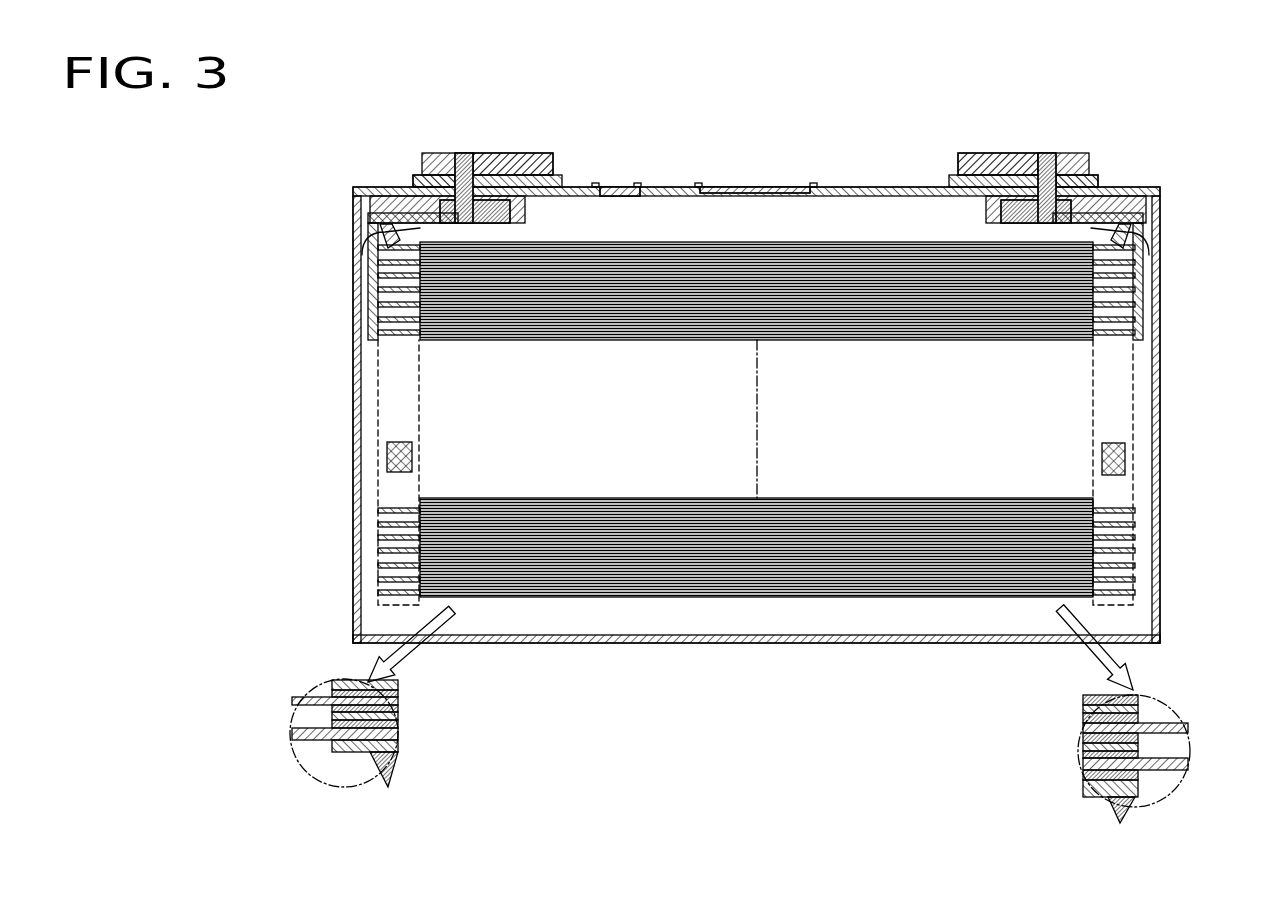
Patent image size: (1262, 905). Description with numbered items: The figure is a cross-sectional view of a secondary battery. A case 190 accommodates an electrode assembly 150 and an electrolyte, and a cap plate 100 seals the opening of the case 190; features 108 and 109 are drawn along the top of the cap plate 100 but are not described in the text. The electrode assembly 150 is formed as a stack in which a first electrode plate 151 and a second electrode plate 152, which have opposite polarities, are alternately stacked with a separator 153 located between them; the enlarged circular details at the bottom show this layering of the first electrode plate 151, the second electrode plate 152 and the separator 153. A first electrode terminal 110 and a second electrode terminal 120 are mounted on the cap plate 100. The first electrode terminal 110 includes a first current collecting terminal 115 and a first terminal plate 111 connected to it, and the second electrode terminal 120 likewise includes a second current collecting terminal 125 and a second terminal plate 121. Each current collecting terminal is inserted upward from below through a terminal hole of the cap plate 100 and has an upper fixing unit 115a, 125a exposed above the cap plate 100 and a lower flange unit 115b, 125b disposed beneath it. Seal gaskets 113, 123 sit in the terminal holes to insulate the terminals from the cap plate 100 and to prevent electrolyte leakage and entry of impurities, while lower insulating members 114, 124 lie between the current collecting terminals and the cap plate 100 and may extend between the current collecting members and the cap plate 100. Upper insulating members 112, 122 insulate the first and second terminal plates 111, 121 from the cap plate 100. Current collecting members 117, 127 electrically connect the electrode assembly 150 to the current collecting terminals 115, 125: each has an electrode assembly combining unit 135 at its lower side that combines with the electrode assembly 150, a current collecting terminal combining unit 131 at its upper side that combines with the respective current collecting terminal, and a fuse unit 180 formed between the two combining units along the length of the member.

The cap plate 100 is at (362, 190).
The vent 108 is at (790, 186).
The electrolyte injection hole 109 is at (625, 186).
The first electrode terminal 110 is at (1081, 140).
The first terminal plate 111 is at (1080, 178).
The upper insulating member 112 is at (1130, 185).
The seal gasket 113 is at (1000, 180).
The lower insulating member 114 is at (1130, 205).
The first current collecting terminal 115 is at (1023, 164).
The first current collecting terminal fixing unit 115a is at (1018, 152).
The first current collecting terminal flange unit 115b is at (960, 180).
The current collecting member 117 is at (1138, 298).
The second electrode terminal 120 is at (437, 140).
The second terminal plate 121 is at (440, 178).
The upper insulating member 122 is at (410, 178).
The seal gasket 123 is at (520, 180).
The lower insulating member 124 is at (370, 200).
The second current collecting terminal 125 is at (487, 164).
The second current collecting terminal fixing unit 125a is at (470, 160).
The second current collecting terminal flange unit 125b is at (553, 165).
The current collecting member 127 is at (372, 298).
The current collecting terminal combining unit 131 is at (370, 248).
The electrode assembly combining unit 135 is at (395, 455).
The electrode assembly 150 is at (668, 432).
The first electrode plate 151 is at (1110, 550).
The second electrode plate 152 is at (400, 550).
The separator 153 is at (652, 600).
The fuse unit 180 is at (380, 226).
The case 190 is at (1160, 415).